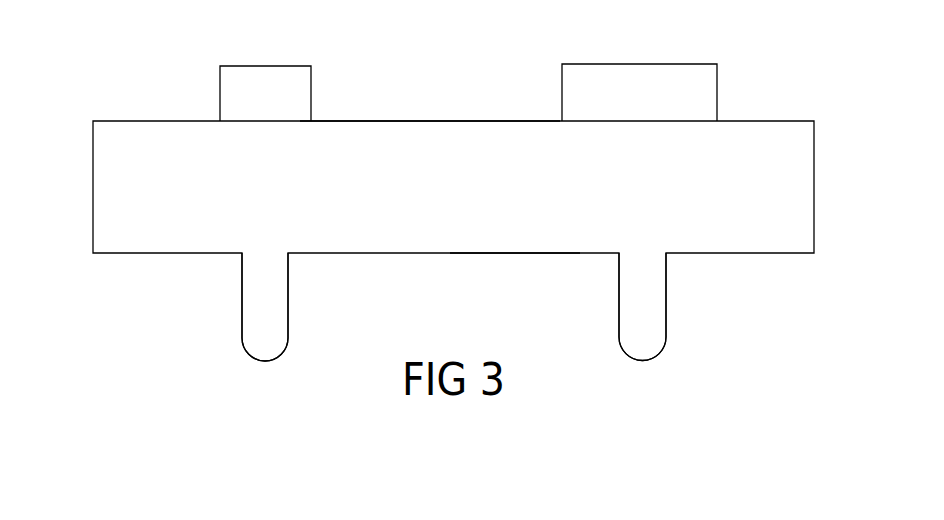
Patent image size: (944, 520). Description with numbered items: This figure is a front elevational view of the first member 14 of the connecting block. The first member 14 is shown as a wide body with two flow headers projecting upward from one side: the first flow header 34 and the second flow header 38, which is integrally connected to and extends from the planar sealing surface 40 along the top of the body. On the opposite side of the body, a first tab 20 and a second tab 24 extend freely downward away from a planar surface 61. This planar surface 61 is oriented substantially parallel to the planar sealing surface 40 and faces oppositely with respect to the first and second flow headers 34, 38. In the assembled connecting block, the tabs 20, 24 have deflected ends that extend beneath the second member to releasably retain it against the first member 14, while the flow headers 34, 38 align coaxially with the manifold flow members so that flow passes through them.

The first member 14 is at (142, 223).
The first tabs 20 is at (264, 317).
The second tabs 24 is at (635, 310).
The first flow header 34 is at (295, 80).
The second flow header 38 is at (585, 98).
The planar sealing surface 40 is at (452, 120).
The planar surface 61 is at (513, 254).